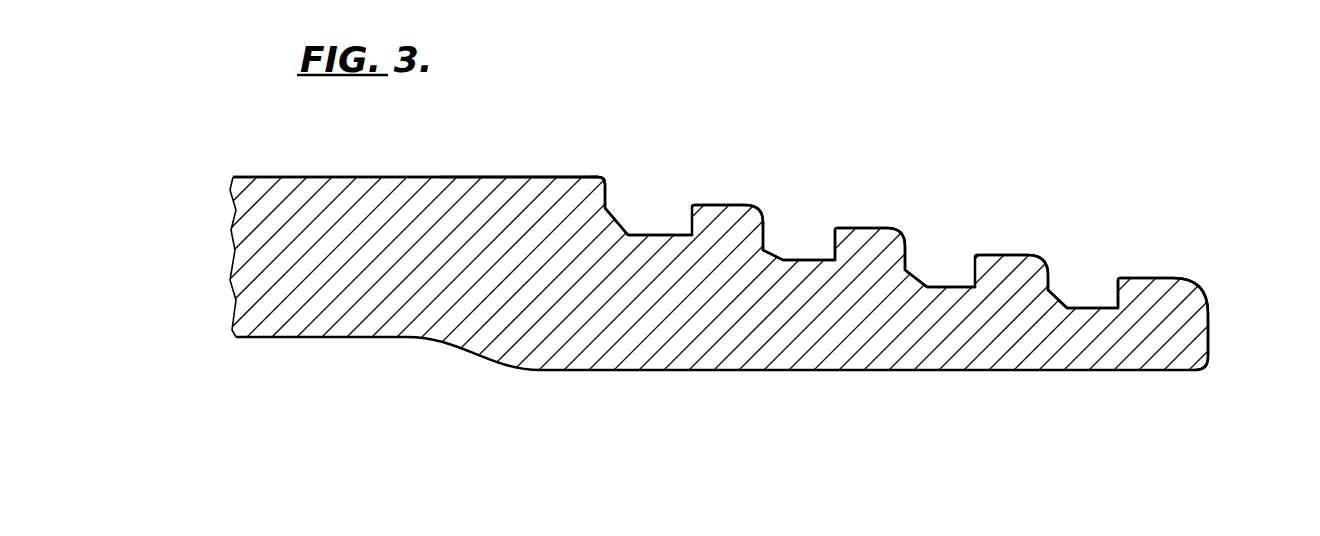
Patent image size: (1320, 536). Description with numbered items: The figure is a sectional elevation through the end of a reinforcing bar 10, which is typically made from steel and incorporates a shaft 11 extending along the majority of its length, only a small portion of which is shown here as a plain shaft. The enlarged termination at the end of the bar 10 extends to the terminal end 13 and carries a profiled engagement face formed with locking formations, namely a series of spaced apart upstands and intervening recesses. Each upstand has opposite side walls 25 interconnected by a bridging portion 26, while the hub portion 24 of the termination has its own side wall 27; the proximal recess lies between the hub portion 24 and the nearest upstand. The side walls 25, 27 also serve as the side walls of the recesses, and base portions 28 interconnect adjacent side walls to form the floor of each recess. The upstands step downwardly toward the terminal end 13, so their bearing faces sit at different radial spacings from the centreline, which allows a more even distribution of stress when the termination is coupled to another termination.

The reinforcing bar 10 is at (258, 135).
The shaft 11 is at (355, 177).
The terminal end 13 is at (1210, 345).
The hub portion 24 is at (487, 177).
The side walls 25 is at (618, 217).
The bridging portions 26 is at (728, 203).
The side wall 27 is at (611, 188).
The base portions 28 is at (658, 233).